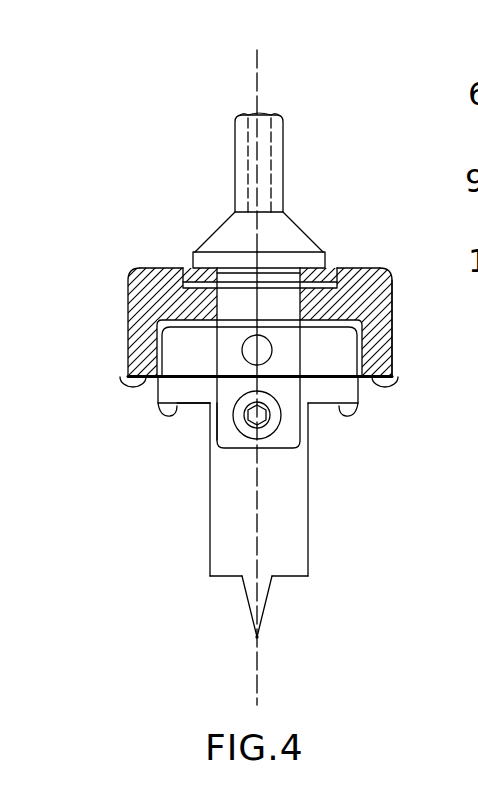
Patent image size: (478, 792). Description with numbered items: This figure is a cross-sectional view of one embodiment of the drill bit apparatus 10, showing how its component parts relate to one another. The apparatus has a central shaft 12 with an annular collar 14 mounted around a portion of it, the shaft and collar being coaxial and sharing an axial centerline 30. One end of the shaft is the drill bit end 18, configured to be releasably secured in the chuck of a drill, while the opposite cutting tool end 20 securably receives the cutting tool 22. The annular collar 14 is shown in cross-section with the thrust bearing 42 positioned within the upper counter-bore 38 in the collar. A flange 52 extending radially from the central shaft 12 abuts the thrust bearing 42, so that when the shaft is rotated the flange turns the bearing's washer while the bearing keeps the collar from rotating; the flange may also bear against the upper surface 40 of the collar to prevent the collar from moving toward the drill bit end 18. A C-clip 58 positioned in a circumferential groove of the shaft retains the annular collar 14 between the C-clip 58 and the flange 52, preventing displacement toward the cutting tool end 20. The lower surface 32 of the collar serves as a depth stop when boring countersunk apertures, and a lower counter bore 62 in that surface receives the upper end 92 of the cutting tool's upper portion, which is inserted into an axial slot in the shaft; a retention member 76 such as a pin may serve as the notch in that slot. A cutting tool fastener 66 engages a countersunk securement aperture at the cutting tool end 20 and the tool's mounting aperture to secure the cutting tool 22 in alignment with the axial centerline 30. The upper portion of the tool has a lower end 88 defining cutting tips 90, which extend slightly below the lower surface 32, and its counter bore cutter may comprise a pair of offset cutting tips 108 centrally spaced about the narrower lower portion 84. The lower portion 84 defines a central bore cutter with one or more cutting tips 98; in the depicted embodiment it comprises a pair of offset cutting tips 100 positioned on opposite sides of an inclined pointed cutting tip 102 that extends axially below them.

The drill bit apparatus 10 is at (190, 215).
The central shaft 12 is at (233, 162).
The annular collar 14 is at (390, 333).
The drill bit end 18 is at (280, 143).
The cutting tool end 20 is at (292, 453).
The cutting tool 22 is at (210, 532).
The axial centerline 30 is at (260, 100).
The lower surface 32 is at (140, 385).
The upper counter-bore 38 is at (160, 305).
The upper surface 40 is at (343, 274).
The thrust bearing 42 is at (300, 277).
The flange 52 is at (280, 277).
The C-clip 58 is at (365, 268).
The lower counter bore 62 is at (128, 313).
The cutting tool fastener 66 is at (251, 430).
The retention member 76 is at (173, 410).
The lower portion 84 is at (310, 530).
The lower end 88 is at (207, 403).
The cutting tips 90 is at (158, 424).
The upper end 92 is at (395, 288).
The cutting tips 98 is at (210, 578).
The offset cutting tips 100 is at (218, 583).
The pointed cutting tip 102 is at (263, 613).
The offset cutting tips 108 is at (163, 416).